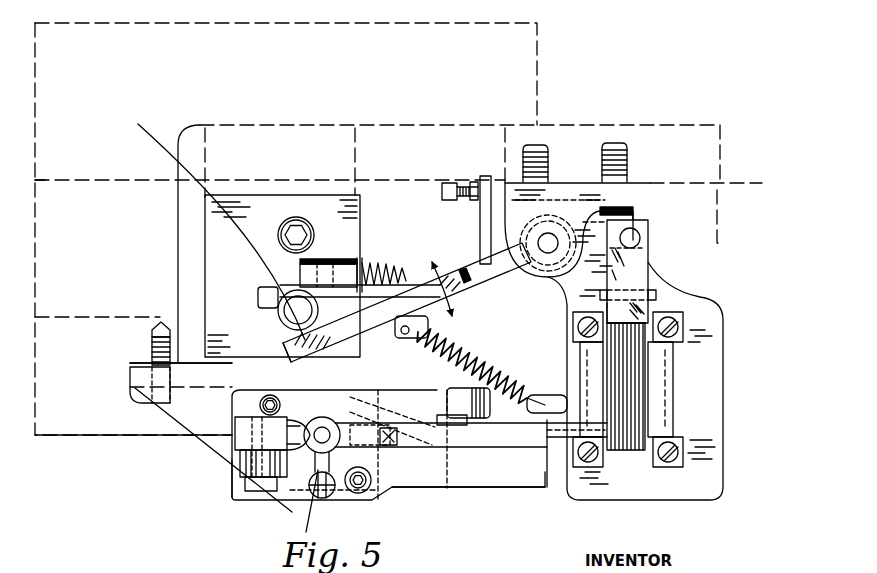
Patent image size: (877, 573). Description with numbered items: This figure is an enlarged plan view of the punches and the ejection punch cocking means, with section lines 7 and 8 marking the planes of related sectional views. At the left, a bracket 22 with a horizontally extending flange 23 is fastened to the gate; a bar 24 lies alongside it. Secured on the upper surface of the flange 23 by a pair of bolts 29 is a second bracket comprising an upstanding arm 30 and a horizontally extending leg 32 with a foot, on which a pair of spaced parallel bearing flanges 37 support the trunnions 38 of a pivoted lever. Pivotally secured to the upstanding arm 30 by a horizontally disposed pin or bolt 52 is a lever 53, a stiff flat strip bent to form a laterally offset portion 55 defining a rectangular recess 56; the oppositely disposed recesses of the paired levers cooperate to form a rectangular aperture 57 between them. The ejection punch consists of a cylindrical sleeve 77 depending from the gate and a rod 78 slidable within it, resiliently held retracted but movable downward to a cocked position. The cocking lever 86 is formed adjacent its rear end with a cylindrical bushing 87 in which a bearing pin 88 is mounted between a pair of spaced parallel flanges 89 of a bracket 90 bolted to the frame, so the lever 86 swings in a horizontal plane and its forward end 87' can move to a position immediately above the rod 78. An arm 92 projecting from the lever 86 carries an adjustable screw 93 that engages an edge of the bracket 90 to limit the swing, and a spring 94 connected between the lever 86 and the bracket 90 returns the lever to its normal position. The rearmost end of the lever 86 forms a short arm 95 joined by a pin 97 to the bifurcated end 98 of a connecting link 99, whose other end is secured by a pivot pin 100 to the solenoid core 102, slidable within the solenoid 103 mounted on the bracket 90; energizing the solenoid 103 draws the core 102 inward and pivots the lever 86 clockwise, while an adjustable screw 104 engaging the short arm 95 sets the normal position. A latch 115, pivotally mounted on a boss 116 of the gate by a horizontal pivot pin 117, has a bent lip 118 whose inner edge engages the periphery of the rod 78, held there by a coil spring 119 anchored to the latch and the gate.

The section line 7- 7 is at (145, 136).
The section line 8- 8 is at (113, 176).
The bracket 22 is at (130, 378).
The horizontally extending flange 23 is at (193, 455).
The bar 24 is at (392, 332).
The bolts 29 is at (259, 405).
The upstanding arm 30 is at (233, 465).
The horizontally extending leg 32 is at (405, 480).
The bearing flanges 37 is at (402, 400).
The trunnions 38 is at (462, 392).
The pin or bolt 52 is at (238, 430).
The lever 53 is at (289, 428).
The laterally offset portion 55 is at (357, 422).
The notch or recess 56 is at (322, 418).
The aperture 57 is at (357, 494).
The cylindrical sleeve 77 is at (279, 315).
The rod 78 is at (258, 296).
The lever 86 is at (450, 289).
The cylindrical bushing 87 is at (537, 262).
The forward or outer end 87' is at (261, 349).
The bearing pin 88 is at (546, 254).
The flanges 89 is at (558, 275).
The bracket 90 is at (570, 185).
The arm 92 is at (481, 235).
The adjustable screw 93 is at (459, 182).
The spring 94 is at (472, 354).
The short arm 95 is at (600, 200).
The pin 97 is at (640, 238).
The bifurcated end 98 is at (650, 240).
The connecting link 99 is at (637, 272).
The pivot pin 100 is at (660, 297).
The solenoid core 102 is at (631, 321).
The solenoid 103 is at (653, 388).
The adjustable screw 104 is at (636, 210).
The latch 115 is at (370, 284).
The boss 116 is at (291, 216).
The horizontal pivot pin 117 is at (338, 196).
The lip 118 is at (275, 262).
The coil spring 119 is at (390, 272).